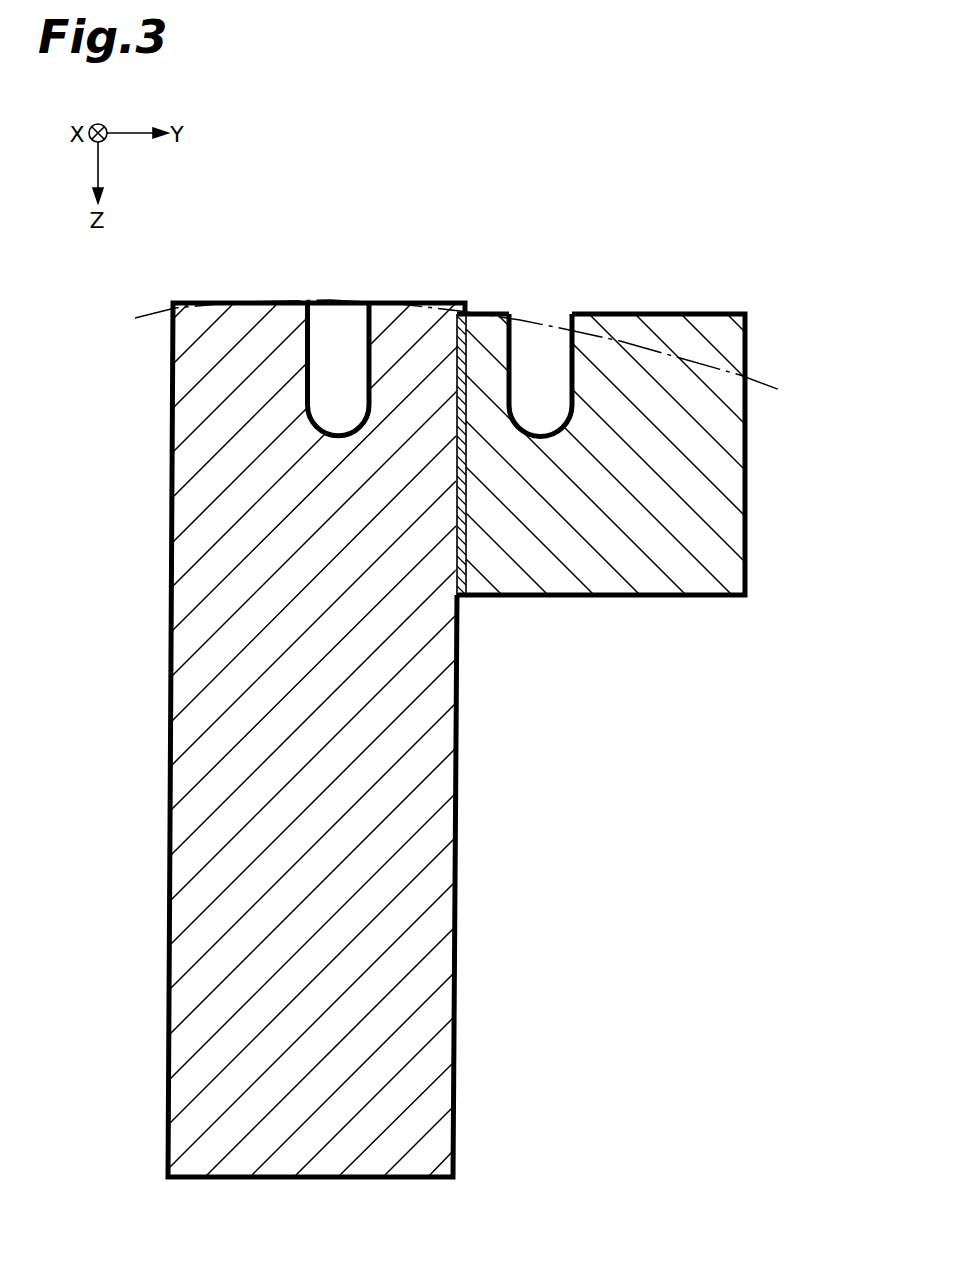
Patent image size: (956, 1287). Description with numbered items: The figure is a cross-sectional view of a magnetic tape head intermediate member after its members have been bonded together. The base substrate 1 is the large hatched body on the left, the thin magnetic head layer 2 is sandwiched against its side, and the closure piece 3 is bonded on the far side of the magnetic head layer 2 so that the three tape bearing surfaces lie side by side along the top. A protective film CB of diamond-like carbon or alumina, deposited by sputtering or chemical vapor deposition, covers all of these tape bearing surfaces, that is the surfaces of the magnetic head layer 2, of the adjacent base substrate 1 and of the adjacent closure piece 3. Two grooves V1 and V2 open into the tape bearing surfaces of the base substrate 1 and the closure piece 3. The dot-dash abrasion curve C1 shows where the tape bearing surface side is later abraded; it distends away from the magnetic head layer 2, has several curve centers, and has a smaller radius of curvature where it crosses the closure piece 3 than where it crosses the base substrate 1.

The base substrate 1 is at (243, 325).
The magnetic head layer 2 is at (461, 311).
The closure piece 3 is at (668, 313).
The first groove V1 is at (315, 335).
The second groove V2 is at (567, 350).
The protective film CB is at (498, 318).
The abrasion curve C1 is at (768, 381).